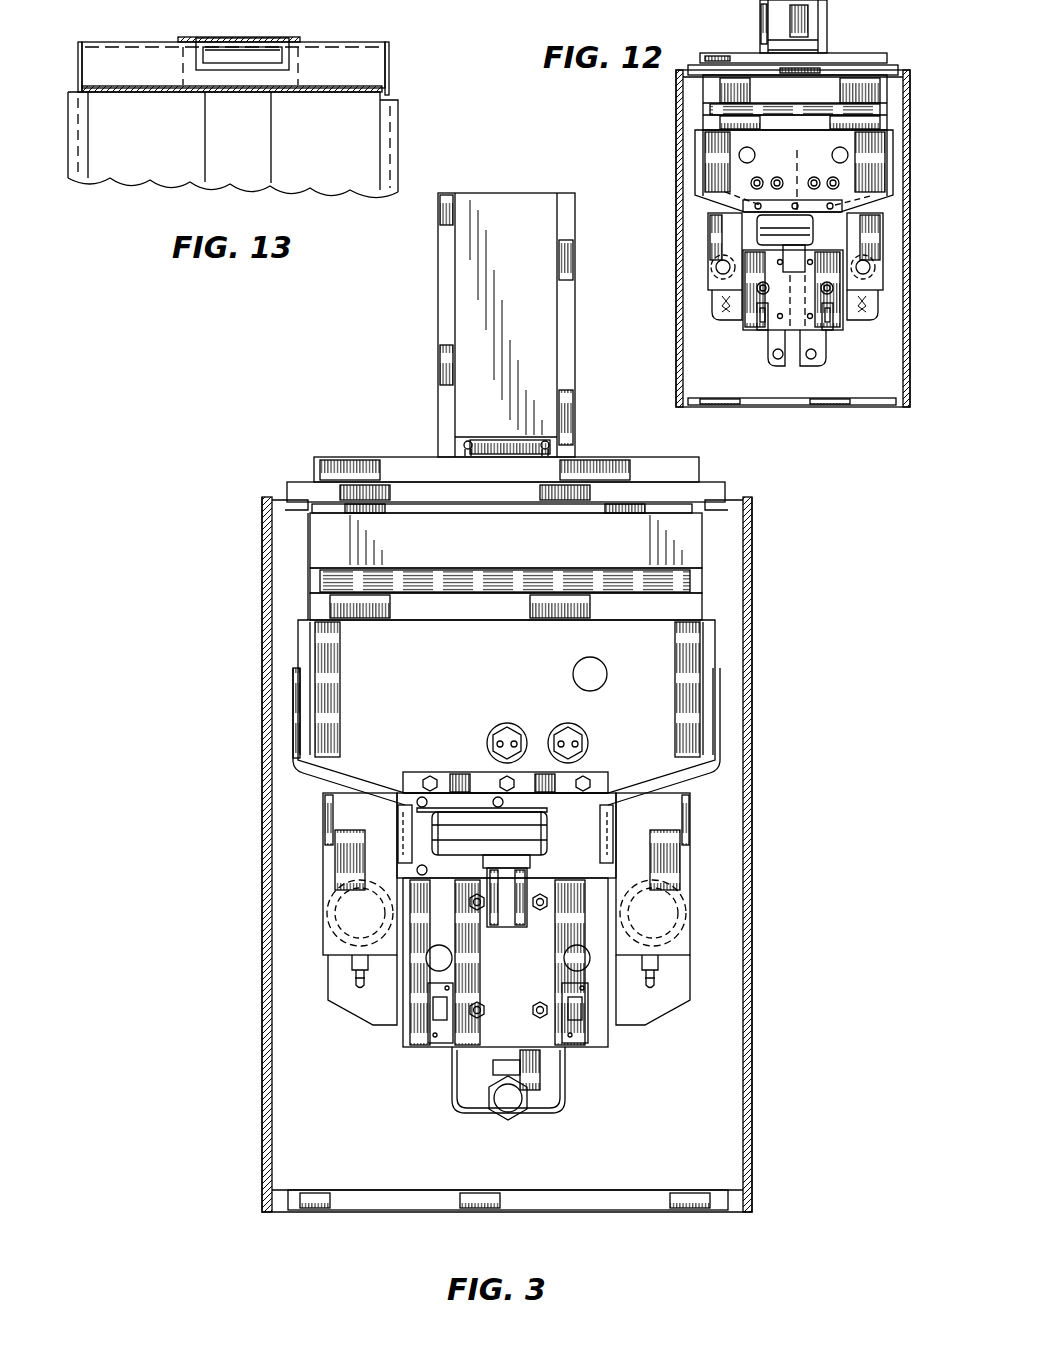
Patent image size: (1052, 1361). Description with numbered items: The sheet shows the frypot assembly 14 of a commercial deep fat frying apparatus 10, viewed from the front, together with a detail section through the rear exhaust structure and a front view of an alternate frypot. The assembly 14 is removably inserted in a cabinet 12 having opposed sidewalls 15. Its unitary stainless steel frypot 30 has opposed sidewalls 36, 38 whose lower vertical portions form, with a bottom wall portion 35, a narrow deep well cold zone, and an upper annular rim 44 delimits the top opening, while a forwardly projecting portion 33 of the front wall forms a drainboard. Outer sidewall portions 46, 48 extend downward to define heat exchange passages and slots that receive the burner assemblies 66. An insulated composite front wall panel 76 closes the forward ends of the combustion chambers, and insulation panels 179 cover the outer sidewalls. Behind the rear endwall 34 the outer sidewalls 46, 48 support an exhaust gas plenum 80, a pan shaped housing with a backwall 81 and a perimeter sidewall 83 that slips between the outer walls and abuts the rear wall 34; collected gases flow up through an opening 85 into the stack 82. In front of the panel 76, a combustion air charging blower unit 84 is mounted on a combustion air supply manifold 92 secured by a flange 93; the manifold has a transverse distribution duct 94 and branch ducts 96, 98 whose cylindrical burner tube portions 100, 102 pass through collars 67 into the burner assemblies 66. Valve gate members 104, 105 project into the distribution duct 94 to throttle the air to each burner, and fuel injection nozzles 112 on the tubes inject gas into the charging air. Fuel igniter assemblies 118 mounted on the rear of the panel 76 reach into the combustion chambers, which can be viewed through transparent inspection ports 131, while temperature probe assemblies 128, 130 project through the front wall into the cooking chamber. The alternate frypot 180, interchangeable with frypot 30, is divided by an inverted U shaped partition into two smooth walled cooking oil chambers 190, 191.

In FIG. 3, the cooking apparatus 10 is at (800, 565).
In FIG. 12, the cabinet 12 is at (676, 322).
In FIG. 3, the cabinet 12 is at (755, 632).
In FIG. 3, the frypot assembly 14 is at (300, 560).
In FIG. 3, the sidewalls 15 is at (752, 692).
In FIG. 3, the frypot 30 is at (338, 512).
In FIG. 3, the forwardly projecting portion 33 is at (692, 582).
In FIG. 13, the rear endwall 34 is at (308, 95).
In FIG. 3, the bottom wall portion 35 is at (535, 1115).
In FIG. 3, the sidewall 36 is at (703, 562).
In FIG. 3, the sidewall 38 is at (310, 535).
In FIG. 13, the upper annular rim 44 is at (398, 168).
In FIG. 3, the upper annular rim 44 is at (700, 496).
In FIG. 13, the outer sidewall portion 46 is at (390, 60).
In FIG. 13, the outer sidewall portion 48 is at (78, 72).
In FIG. 12, the burner assemblies 66 is at (725, 322).
In FIG. 3, the burner assemblies 66 is at (345, 1028).
In FIG. 3, the collars 67 is at (690, 888).
In FIG. 12, the composite front wall panel 76 is at (710, 142).
In FIG. 3, the composite front wall panel 76 is at (692, 662).
In FIG. 13, the exhaust gas plenum 80 is at (350, 42).
In FIG. 13, the backwall 81 is at (157, 42).
In FIG. 13, the stack 82 is at (282, 56).
In FIG. 12, the stack 82 is at (827, 30).
In FIG. 3, the stack 82 is at (445, 308).
In FIG. 13, the perimeter sidewall 83 is at (135, 60).
In FIG. 12, the combustion air charging blower unit 84 is at (760, 230).
In FIG. 3, the combustion air charging blower unit 84 is at (545, 858).
In FIG. 13, the opening 85 is at (262, 52).
In FIG. 12, the combustion air supply manifold 92 is at (870, 240).
In FIG. 12, the flange 93 is at (792, 206).
In FIG. 3, the flange 93 is at (440, 780).
In FIG. 3, the transverse distribution duct 94 is at (595, 845).
In FIG. 3, the branch duct 96 is at (690, 850).
In FIG. 3, the branch duct 98 is at (328, 848).
In FIG. 3, the cylindrical burner tube portion 100 is at (670, 947).
In FIG. 3, the cylindrical burner tube portion 102 is at (327, 878).
In FIG. 3, the valve gate member 104 is at (612, 815).
In FIG. 3, the valve gate member 105 is at (400, 812).
In FIG. 3, the fuel injection nozzle 112 is at (355, 975).
In FIG. 12, the fuel igniter assemblies 118 is at (762, 333).
In FIG. 3, the fuel igniter assemblies 118 is at (440, 1045).
In FIG. 12, the temperature probe assembly 128 is at (753, 180).
In FIG. 3, the temperature probe assembly 128 is at (486, 748).
In FIG. 12, the temperature probe assembly 130 is at (773, 186).
In FIG. 3, the temperature probe assembly 130 is at (590, 746).
In FIG. 3, the inspection ports 131 is at (435, 945).
In FIG. 3, the insulation panels 179 is at (722, 742).
In FIG. 12, the frypot 180 is at (755, 58).
In FIG. 12, the interior cooking oil chamber 190 is at (870, 202).
In FIG. 12, the interior cooking oil chamber 191 is at (730, 195).